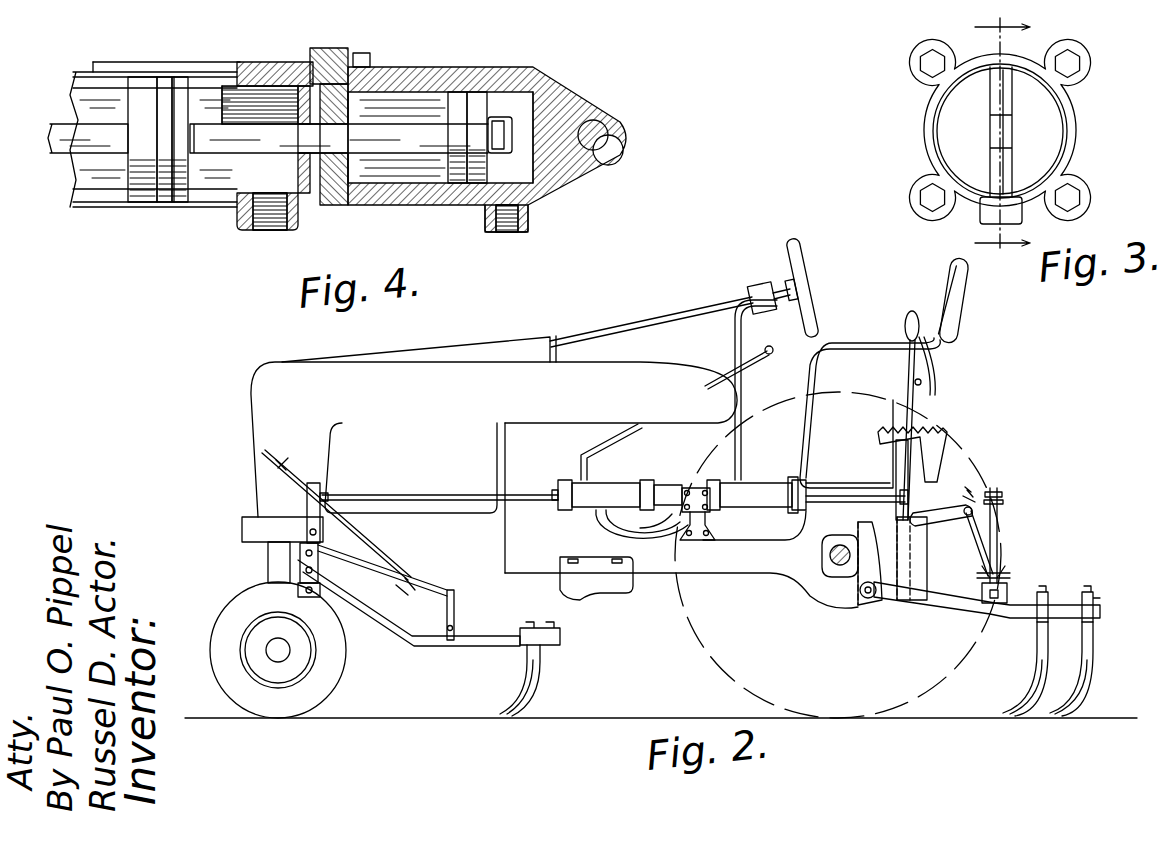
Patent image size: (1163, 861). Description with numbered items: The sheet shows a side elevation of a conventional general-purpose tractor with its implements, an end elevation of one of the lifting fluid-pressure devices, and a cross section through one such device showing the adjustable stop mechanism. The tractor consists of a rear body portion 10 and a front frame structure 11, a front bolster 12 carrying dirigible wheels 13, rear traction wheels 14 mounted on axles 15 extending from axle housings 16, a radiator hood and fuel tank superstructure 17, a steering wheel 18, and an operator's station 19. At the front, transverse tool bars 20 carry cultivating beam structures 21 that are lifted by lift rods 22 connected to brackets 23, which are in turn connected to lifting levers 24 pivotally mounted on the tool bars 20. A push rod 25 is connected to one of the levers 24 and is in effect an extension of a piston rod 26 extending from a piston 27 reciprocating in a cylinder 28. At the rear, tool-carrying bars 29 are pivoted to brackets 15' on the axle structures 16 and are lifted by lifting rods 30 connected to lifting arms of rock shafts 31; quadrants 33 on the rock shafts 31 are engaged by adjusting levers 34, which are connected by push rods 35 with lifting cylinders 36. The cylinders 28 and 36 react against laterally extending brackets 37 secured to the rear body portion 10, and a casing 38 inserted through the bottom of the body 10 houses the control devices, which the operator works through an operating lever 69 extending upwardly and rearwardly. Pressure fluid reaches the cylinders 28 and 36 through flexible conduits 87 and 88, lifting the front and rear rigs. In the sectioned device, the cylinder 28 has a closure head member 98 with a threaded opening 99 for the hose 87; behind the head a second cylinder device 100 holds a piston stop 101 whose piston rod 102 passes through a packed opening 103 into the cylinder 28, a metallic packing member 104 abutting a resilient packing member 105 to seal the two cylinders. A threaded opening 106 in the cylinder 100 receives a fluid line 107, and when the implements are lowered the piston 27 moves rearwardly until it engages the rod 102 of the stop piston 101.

In FIG. 2, the rear body portion 10 is at (668, 576).
In FIG. 2, the front frame structure 11 is at (437, 530).
In FIG. 2, the front bolster 12 is at (268, 565).
In FIG. 2, the dirigible wheels 13 is at (225, 614).
In FIG. 2, the rear traction wheels 14 is at (745, 671).
In FIG. 2, the axles 15 is at (822, 597).
In FIG. 2, the brackets 15' is at (870, 596).
In FIG. 2, the axle housings 16 is at (828, 566).
In FIG. 2, the radiator hood and fuel tank superstructure 17 is at (400, 372).
In FIG. 2, the steering wheel 18 is at (806, 266).
In FIG. 2, the operator's station 19 is at (957, 318).
In FIG. 2, the transverse tool bars 20 is at (268, 553).
In FIG. 2, the cultivating beam structures 21 is at (413, 641).
In FIG. 2, the lift rods 22 is at (355, 541).
In FIG. 2, the brackets 23 is at (328, 497).
In FIG. 2, the lifting levers 24 is at (300, 507).
In FIG. 2, the push rod 25 is at (427, 495).
In FIG. 4, the piston rod 26 is at (68, 128).
In FIG. 4, the piston 27 is at (140, 199).
In FIG. 4, the cylinder 28 is at (168, 207).
In FIG. 2, the cylinder 28 is at (560, 482).
In FIG. 2, the tool-carrying bars 29 is at (970, 608).
In FIG. 2, the lifting rods 30 is at (980, 558).
In FIG. 2, the rock shafts 31 is at (920, 514).
In FIG. 2, the quadrants 33 is at (940, 456).
In FIG. 2, the adjusting levers 34 is at (913, 422).
In FIG. 2, the push rods 35 is at (845, 502).
In FIG. 2, the lifting cylinders 36 is at (752, 486).
In FIG. 2, the brackets 37 is at (703, 524).
In FIG. 2, the casing 38 is at (575, 567).
In FIG. 2, the operating lever 69 is at (622, 437).
In FIG. 2, the flexible conduit 87 is at (606, 523).
In FIG. 2, the flexible conduit 88 is at (752, 527).
In FIG. 4, the closure head member 98 is at (258, 62).
In FIG. 4, the threaded opening 99 is at (283, 212).
In FIG. 4, the second cylinder device 100 is at (440, 68).
In FIG. 3, the second cylinder device 100 is at (923, 123).
In FIG. 2, the second cylinder device 100 is at (666, 485).
In FIG. 4, the piston stop 101 is at (460, 185).
In FIG. 4, the piston rod 102 is at (400, 156).
In FIG. 4, the packed opening 103 is at (298, 157).
In FIG. 4, the metallic packing member 104 is at (322, 158).
In FIG. 4, the resilient packing member 105 is at (316, 146).
In FIG. 4, the threaded opening 106 is at (512, 232).
In FIG. 2, the fluid line 107 is at (672, 518).